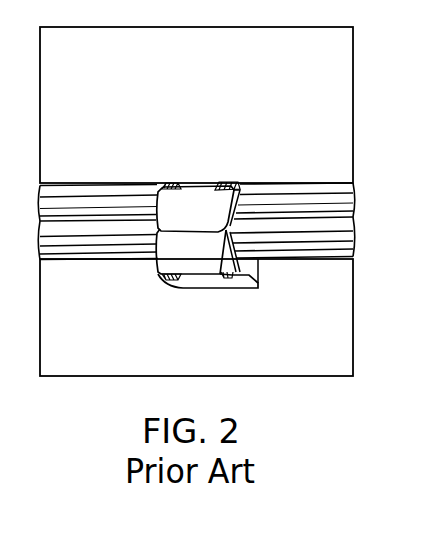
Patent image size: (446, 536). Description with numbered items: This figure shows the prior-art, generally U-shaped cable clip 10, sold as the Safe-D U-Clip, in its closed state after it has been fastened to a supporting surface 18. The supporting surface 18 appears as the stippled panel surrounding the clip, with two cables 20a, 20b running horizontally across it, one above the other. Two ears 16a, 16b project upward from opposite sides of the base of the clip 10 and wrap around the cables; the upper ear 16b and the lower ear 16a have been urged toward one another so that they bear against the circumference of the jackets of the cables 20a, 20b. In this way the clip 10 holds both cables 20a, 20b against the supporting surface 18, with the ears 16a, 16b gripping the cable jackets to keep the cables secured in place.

The cable clip 10 is at (194, 220).
The ear 16a is at (163, 264).
The ear 16b is at (160, 186).
The supporting surface 18 is at (91, 126).
The cable 20a is at (315, 240).
The cable 20b is at (336, 192).